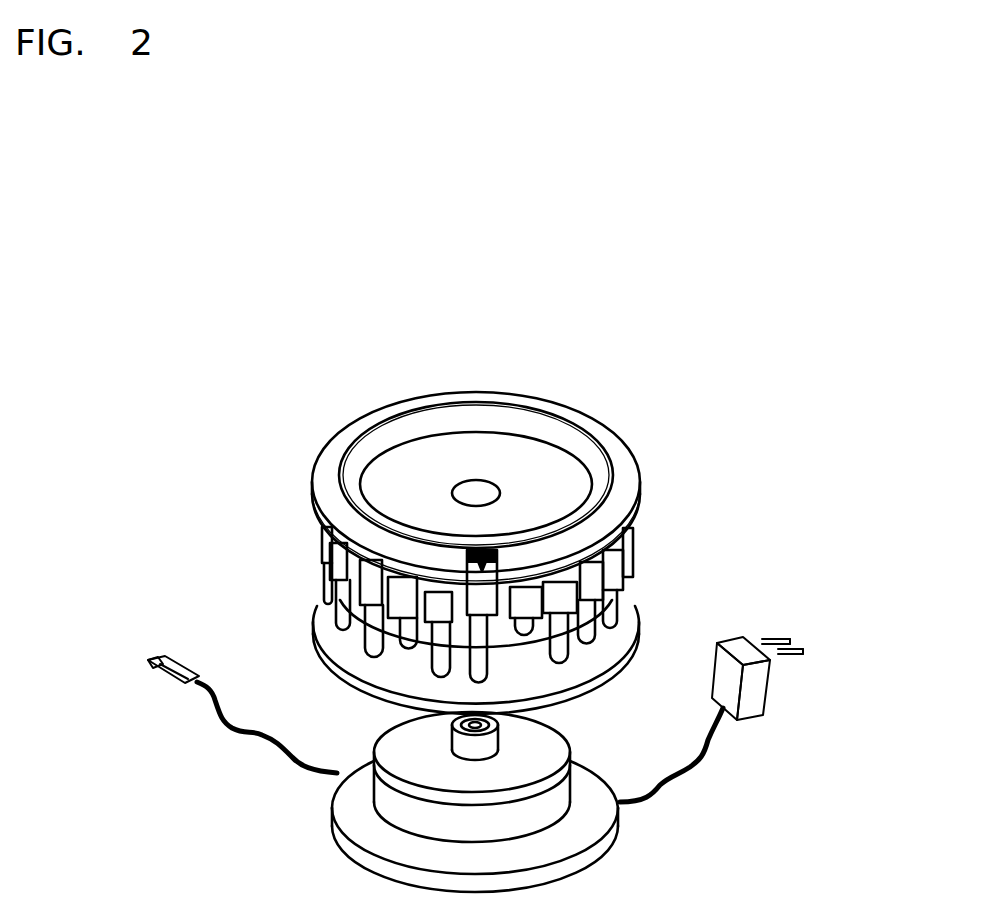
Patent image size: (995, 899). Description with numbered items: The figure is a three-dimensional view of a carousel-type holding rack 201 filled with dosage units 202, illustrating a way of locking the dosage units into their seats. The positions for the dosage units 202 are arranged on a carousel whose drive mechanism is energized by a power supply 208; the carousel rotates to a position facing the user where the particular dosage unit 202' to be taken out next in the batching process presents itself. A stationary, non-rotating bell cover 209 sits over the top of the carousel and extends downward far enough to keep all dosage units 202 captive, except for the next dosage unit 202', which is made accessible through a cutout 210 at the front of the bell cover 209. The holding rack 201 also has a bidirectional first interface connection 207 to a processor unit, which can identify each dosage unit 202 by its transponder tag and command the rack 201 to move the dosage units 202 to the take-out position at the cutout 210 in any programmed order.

The holding rack 201 is at (228, 462).
The dosage units 202 is at (455, 450).
The particular dosage unit 202' is at (674, 589).
The first interface connection 207 is at (168, 677).
The power supply 208 is at (755, 685).
The bell cover 209 is at (532, 470).
The cutout 210 is at (480, 552).